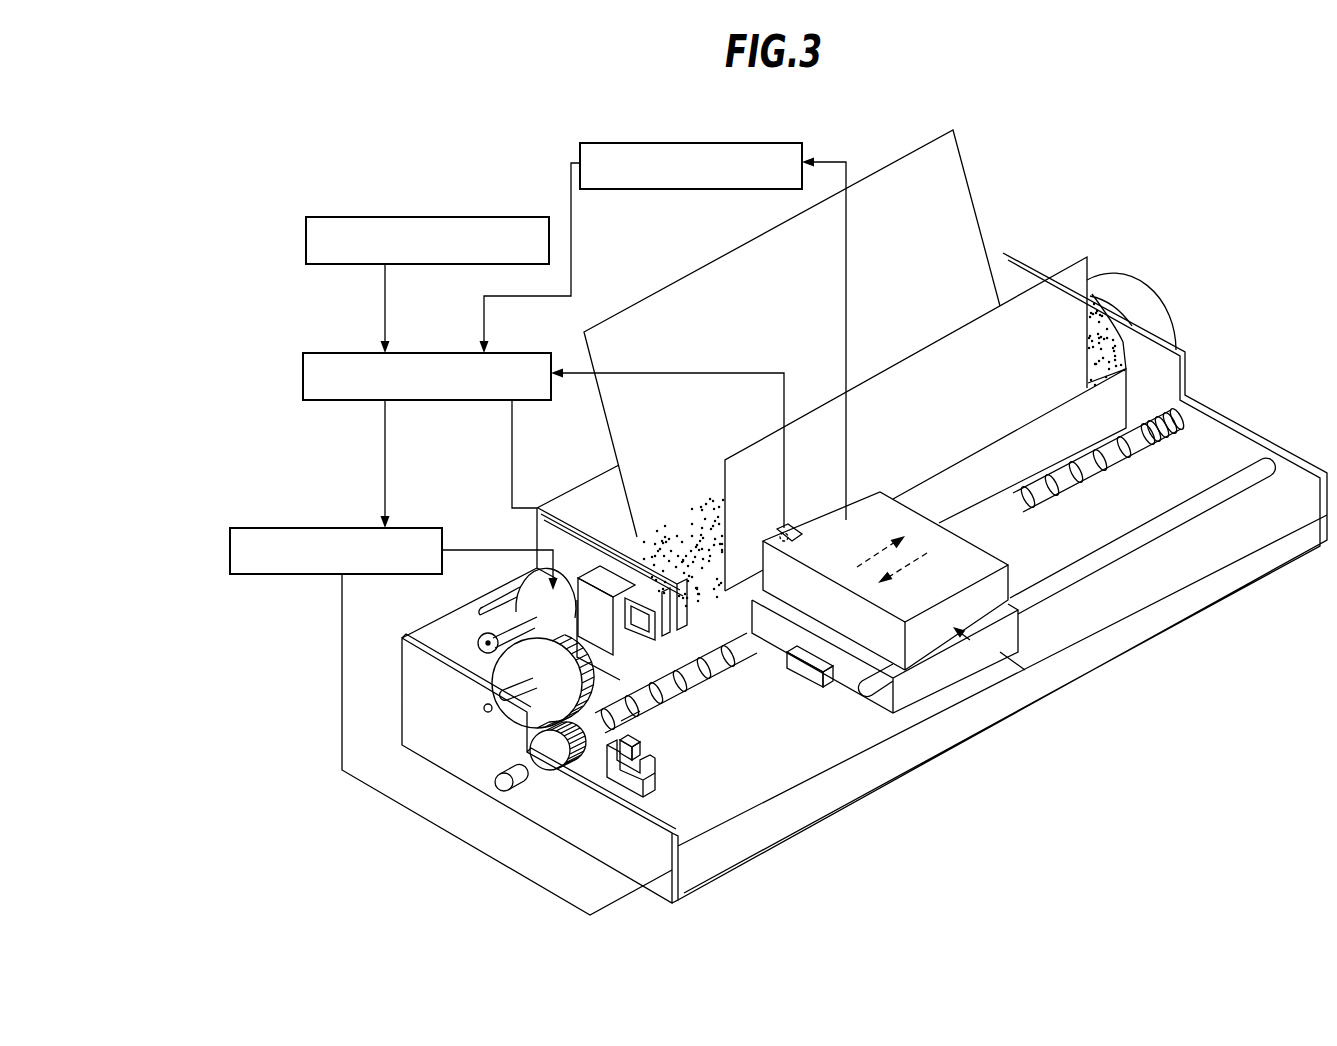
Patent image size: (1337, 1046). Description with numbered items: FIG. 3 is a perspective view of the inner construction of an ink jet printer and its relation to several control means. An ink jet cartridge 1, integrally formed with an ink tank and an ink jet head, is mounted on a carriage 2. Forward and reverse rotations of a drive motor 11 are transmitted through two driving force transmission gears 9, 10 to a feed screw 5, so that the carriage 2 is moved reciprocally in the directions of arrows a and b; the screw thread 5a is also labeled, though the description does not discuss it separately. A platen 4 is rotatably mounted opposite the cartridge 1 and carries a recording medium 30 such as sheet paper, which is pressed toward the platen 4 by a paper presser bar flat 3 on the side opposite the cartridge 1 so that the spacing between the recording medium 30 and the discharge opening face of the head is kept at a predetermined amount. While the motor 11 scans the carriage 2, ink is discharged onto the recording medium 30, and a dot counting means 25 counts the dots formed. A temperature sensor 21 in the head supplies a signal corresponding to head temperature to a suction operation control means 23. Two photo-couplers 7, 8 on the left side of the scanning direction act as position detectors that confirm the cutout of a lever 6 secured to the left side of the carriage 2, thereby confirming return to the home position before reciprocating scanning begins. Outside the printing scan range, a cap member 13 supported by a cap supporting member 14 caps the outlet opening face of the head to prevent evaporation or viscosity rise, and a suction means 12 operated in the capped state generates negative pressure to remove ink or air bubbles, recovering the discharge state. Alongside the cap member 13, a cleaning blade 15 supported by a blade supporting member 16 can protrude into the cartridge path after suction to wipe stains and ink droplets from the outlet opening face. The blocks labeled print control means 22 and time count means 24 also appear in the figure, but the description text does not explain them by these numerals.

The ink jet cartridge 1 is at (1002, 585).
The carriage 2 is at (1012, 650).
The paper presser bar flat 3 is at (1078, 403).
The platen 4 is at (1090, 342).
The feed screw 5 is at (747, 660).
The screw thread 5a is at (698, 693).
The lever 6 is at (806, 690).
The photo-coupler 7 is at (642, 752).
The photo-coupler 8 is at (620, 797).
The driving force transmission gear 9 is at (560, 765).
The driving force transmission gear 10 is at (497, 677).
The drive motor 11 is at (512, 620).
The suction means 12 is at (601, 579).
The cap member 13 is at (677, 615).
The cap supporting member 14 is at (630, 630).
The cleaning blade 15 is at (633, 612).
The blade supporting member 16 is at (542, 538).
The temperature sensor 21 is at (775, 528).
The print control means 22 is at (283, 528).
The suction operation control means 23 is at (318, 353).
The time count means 24 is at (356, 217).
The dot counting means 25 is at (622, 143).
The recording medium 30 is at (955, 177).